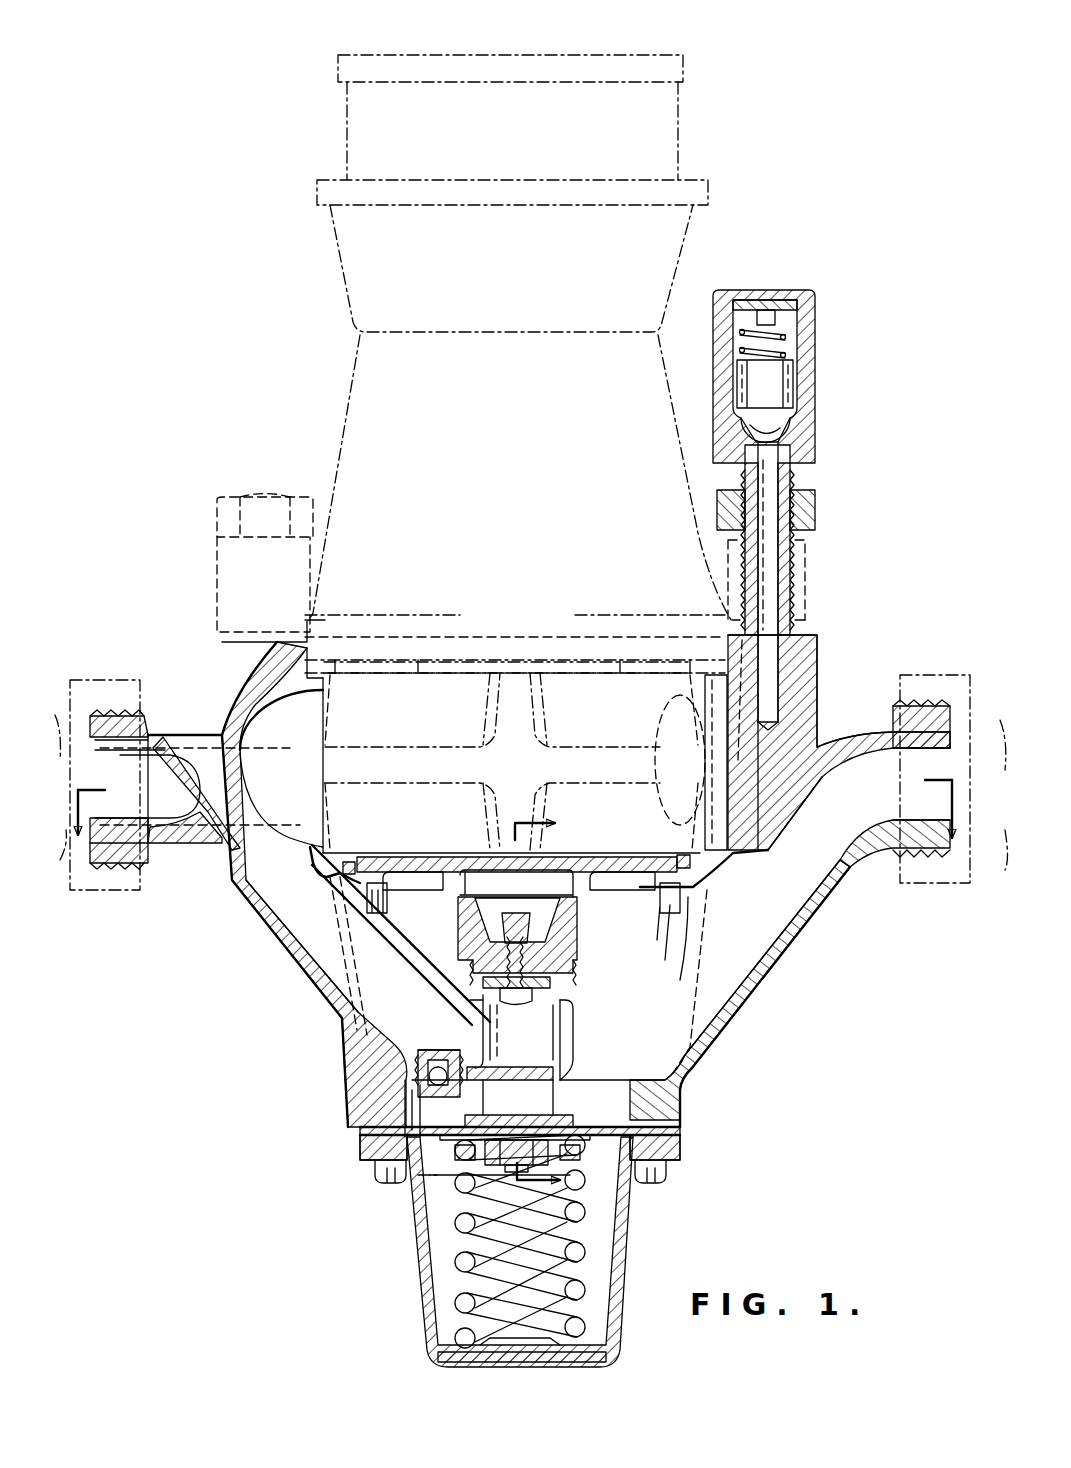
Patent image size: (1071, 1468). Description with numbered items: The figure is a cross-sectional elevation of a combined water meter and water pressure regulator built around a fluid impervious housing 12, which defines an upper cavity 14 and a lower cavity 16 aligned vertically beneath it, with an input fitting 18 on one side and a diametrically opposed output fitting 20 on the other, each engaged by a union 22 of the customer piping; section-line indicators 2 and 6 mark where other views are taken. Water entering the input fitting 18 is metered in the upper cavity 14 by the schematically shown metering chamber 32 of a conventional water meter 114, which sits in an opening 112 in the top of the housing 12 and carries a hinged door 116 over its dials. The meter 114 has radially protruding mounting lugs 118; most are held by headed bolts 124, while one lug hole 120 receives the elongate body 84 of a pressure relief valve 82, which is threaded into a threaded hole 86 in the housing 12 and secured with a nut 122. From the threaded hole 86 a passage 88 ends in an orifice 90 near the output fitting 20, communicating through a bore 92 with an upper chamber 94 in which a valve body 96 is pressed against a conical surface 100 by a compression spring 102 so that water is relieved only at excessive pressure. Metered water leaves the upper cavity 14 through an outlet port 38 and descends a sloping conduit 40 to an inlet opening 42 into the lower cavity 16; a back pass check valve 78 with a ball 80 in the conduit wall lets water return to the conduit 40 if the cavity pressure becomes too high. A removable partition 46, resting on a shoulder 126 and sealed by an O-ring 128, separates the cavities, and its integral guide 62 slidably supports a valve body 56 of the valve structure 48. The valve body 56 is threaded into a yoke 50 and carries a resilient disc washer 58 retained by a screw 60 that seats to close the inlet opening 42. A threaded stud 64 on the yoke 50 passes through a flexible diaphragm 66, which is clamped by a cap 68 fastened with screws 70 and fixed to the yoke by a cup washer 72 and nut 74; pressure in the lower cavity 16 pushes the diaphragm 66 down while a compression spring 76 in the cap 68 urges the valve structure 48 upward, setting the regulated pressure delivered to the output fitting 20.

The housing 12 is at (248, 936).
The upper cavity 14 is at (610, 727).
The lower cavity 16 is at (635, 1027).
The input fitting 18 is at (166, 735).
The output fitting 20 is at (868, 742).
The unions 22 is at (108, 680).
The metering chamber 32 is at (381, 746).
The outlet port 38 is at (305, 845).
The conduit 40 is at (295, 952).
The inlet opening 42 is at (540, 1010).
The partition 46 is at (415, 866).
The valve structure 48 is at (583, 968).
The yoke 50 is at (555, 1078).
The valve body 56 is at (458, 940).
The resilient disc washer 58 is at (483, 1003).
The screw 60 is at (505, 1003).
The guide 62 is at (590, 898).
The threaded stud 64 is at (495, 1193).
The diaphragm 66 is at (603, 1128).
The cap 68 is at (683, 1148).
The screws 70 is at (380, 1183).
The cup washer 72 is at (598, 1140).
The nut 74 is at (588, 1180).
The compression spring 76 is at (592, 1230).
The back pass check valve 78 is at (425, 1048).
The ball 80 is at (440, 1097).
The pressure relief valve 82 is at (823, 447).
The elongate body 84 is at (795, 592).
The threaded hole 86 is at (820, 656).
The passage 88 is at (775, 790).
The orifice 90 is at (768, 840).
The bore 92 is at (800, 485).
The upper chamber 94 is at (795, 328).
The valve body 96 is at (792, 392).
The conical surface 100 is at (796, 420).
The compression spring 102 is at (740, 335).
The opening 112 is at (315, 632).
The water meter 114 is at (346, 412).
The hinged door 116 is at (500, 54).
The mounting lugs 118 is at (217, 582).
The hole 120 is at (808, 556).
The nut 122 is at (822, 514).
The headed bolts 124 is at (235, 497).
The shoulder 126 is at (388, 893).
The O-ring 128 is at (348, 860).
The section line 2- 2 is at (516, 833).
The section line 6- 6 is at (541, 1006).